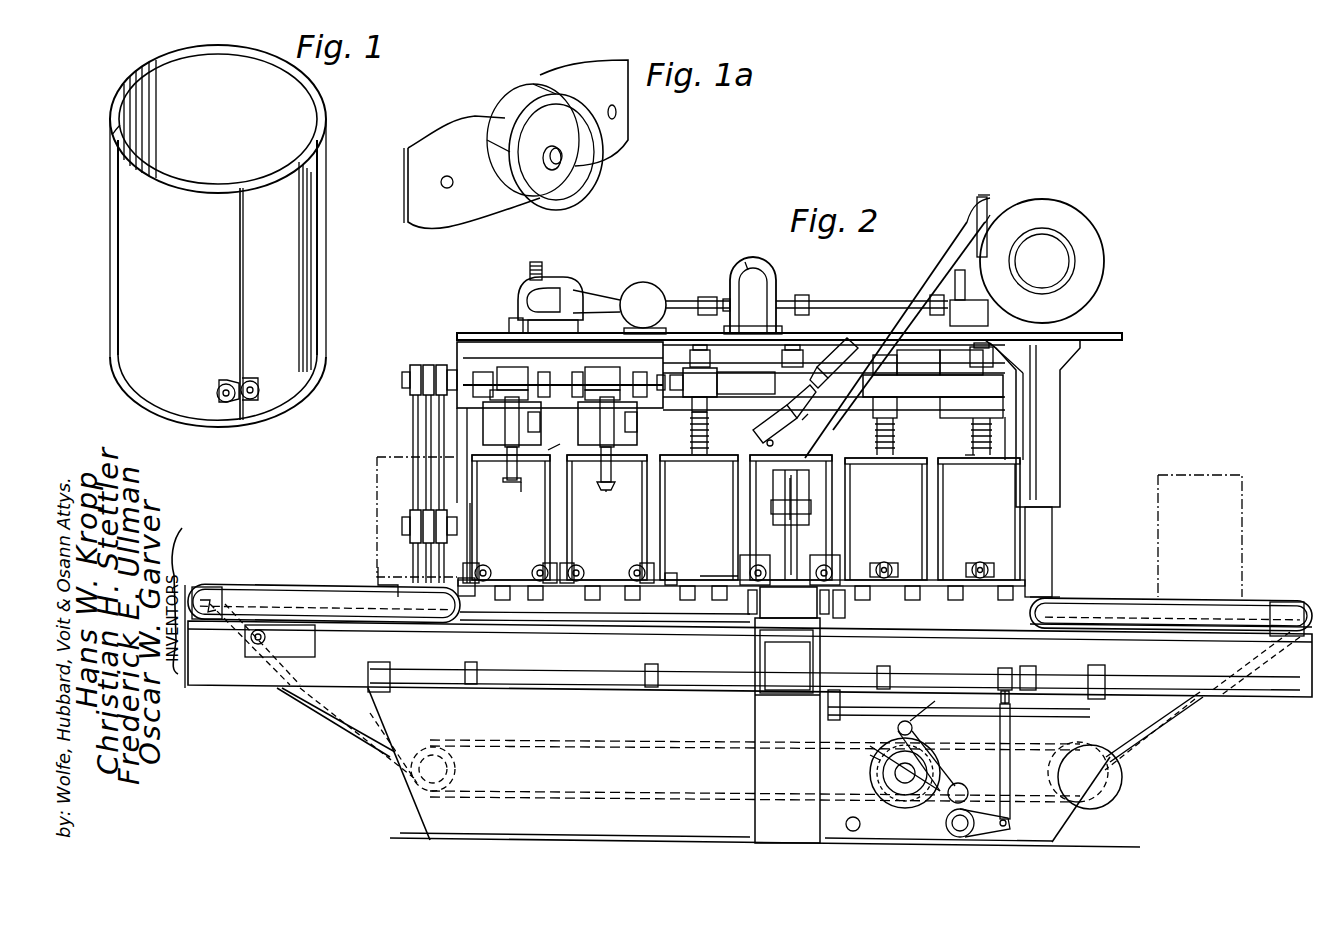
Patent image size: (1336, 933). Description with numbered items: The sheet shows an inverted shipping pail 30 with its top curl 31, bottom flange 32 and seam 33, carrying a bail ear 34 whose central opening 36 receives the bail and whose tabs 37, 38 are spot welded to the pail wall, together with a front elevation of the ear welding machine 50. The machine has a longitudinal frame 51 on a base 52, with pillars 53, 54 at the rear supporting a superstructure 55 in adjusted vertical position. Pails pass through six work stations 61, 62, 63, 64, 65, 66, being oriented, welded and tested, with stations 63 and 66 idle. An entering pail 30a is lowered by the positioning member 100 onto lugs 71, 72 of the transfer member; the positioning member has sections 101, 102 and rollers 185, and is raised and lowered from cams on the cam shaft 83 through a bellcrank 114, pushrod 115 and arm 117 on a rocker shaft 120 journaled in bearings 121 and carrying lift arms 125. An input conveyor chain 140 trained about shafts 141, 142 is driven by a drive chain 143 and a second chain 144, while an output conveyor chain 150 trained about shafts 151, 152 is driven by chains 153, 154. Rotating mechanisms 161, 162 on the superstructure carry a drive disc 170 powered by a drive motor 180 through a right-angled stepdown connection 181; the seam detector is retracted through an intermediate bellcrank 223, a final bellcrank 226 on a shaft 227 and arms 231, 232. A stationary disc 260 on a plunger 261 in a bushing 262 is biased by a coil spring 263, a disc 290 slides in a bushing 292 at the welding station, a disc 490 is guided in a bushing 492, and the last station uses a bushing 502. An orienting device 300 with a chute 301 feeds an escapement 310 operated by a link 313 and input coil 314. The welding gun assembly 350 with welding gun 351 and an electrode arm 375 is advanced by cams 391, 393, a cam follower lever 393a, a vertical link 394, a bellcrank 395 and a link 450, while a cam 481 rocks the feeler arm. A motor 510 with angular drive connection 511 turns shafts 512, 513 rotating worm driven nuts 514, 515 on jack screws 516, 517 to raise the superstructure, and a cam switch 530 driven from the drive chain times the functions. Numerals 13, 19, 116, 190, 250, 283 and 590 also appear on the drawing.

In FIG. 1, the shipping pail 30 is at (135, 231).
In FIG. 1, the top curl 31 is at (112, 365).
In FIG. 1, the bottom flange 32 is at (116, 132).
In FIG. 1, the seam 33 is at (240, 290).
In FIG. 1, the bail ear 34 is at (226, 382).
In FIG. 1A, the bail ear 34 is at (540, 104).
In FIG. 2, the bail ear 34 is at (886, 562).
In FIG. 1A, the central opening 36 is at (558, 150).
In FIG. 1A, the tab 37 is at (448, 146).
In FIG. 1A, the tab 38 is at (626, 136).
In FIG. 2, the machine station 13 is at (828, 498).
In FIG. 2, the direction of travel 19 is at (905, 530).
In FIG. 2, the entering pail 30a is at (376, 492).
In FIG. 2, the machine 50 is at (978, 190).
In FIG. 2, the longitudinal frame 51 is at (276, 684).
In FIG. 2, the base 52 is at (422, 806).
In FIG. 2, the pillar 53 is at (458, 506).
In FIG. 2, the pillar 54 is at (1052, 548).
In FIG. 2, the superstructure 55 is at (452, 348).
In FIG. 2, the first work station 61 is at (521, 537).
In FIG. 2, the second work station 62 is at (619, 537).
In FIG. 2, the third work station 63 is at (699, 517).
In FIG. 2, the fourth work station 64 is at (828, 460).
In FIG. 2, the fifth work station 65 is at (899, 499).
In FIG. 2, the sixth work station 66 is at (979, 519).
In FIG. 2, the pail engaging lug 71 is at (378, 574).
In FIG. 2, the pail engaging lug 72 is at (468, 578).
In FIG. 2, the cam shaft 83 is at (895, 773).
In FIG. 2, the positioning member 100 is at (372, 556).
In FIG. 2, the positioning member section 101 is at (590, 622).
In FIG. 2, the positioning member section 102 is at (990, 628).
In FIG. 2, the bellcrank 114 is at (1000, 836).
In FIG. 2, the pushrod 115 is at (958, 837).
In FIG. 2, the connecting rod 116 is at (1012, 737).
In FIG. 2, the arm 117 is at (1012, 701).
In FIG. 2, the rocker shaft 120 is at (1072, 672).
In FIG. 2, the bearing 121 is at (368, 668).
In FIG. 2, the lift arm 125 is at (936, 672).
In FIG. 2, the input conveyor chain 140 is at (320, 587).
In FIG. 2, the shaft 141 is at (206, 585).
In FIG. 2, the shaft 142 is at (470, 660).
In FIG. 2, the drive chain 143 is at (345, 722).
In FIG. 2, the second chain 144 is at (615, 806).
In FIG. 2, the output conveyor chain 150 is at (1171, 594).
In FIG. 2, the shaft 151 is at (1272, 608).
In FIG. 2, the shaft 152 is at (1040, 597).
In FIG. 2, the drive chain 153 is at (1156, 732).
In FIG. 2, the drive chain 154 is at (1068, 812).
In FIG. 2, the rotating mechanism 161 is at (484, 428).
In FIG. 2, the rotating mechanism 162 is at (638, 434).
In FIG. 2, the drive disc 170 is at (544, 458).
In FIG. 2, the drive motor 180 is at (648, 288).
In FIG. 2, the right-angled stepdown connection 181 is at (560, 286).
In FIG. 2, the roller 185 is at (492, 572).
In FIG. 2, the station head 190 is at (517, 497).
In FIG. 2, the intermediate bellcrank 223 is at (404, 516).
In FIG. 2, the final bellcrank 226 is at (412, 396).
In FIG. 2, the shaft 227 is at (562, 378).
In FIG. 2, the arm 231 is at (486, 378).
In FIG. 2, the arm 232 is at (528, 376).
In FIG. 2, the station head 250 is at (595, 500).
In FIG. 2, the stationary disc 260 is at (696, 456).
In FIG. 2, the plunger 261 is at (708, 406).
In FIG. 2, the bushing 262 is at (716, 384).
In FIG. 2, the coil spring 263 is at (708, 420).
In FIG. 2, the rail block 283 is at (660, 668).
In FIG. 2, the disc 290 is at (758, 436).
In FIG. 2, the bushing 292 is at (780, 360).
In FIG. 2, the orienting device 300 is at (1100, 232).
In FIG. 2, the chute 301 is at (950, 278).
In FIG. 2, the escapement 310 is at (820, 418).
In FIG. 2, the link 313 is at (790, 442).
In FIG. 2, the input coil 314 is at (838, 352).
In FIG. 2, the welding gun assembly 350 is at (720, 566).
In FIG. 2, the welding gun 351 is at (708, 574).
In FIG. 2, the electrode arm 375 is at (746, 608).
In FIG. 2, the cam 391 is at (870, 762).
In FIG. 2, the cam 393 is at (940, 786).
In FIG. 2, the cam follower lever 393a is at (940, 702).
In FIG. 2, the vertical link 394 is at (842, 700).
In FIG. 2, the bellcrank 395 is at (846, 609).
In FIG. 2, the link 450 is at (788, 602).
In FIG. 2, the cam 481 is at (895, 670).
In FIG. 2, the disc 490 is at (933, 436).
In FIG. 2, the bushing 492 is at (938, 410).
In FIG. 2, the bushing 502 is at (900, 386).
In FIG. 2, the motor 510 is at (748, 262).
In FIG. 2, the angular drive connection 511 is at (760, 272).
In FIG. 2, the shaft 512 is at (712, 288).
In FIG. 2, the shaft 513 is at (840, 296).
In FIG. 2, the worm driven nut 514 is at (510, 325).
In FIG. 2, the worm driven nut 515 is at (992, 310).
In FIG. 2, the jack screw 516 is at (530, 275).
In FIG. 2, the jack screw 517 is at (970, 215).
In FIG. 2, the cam switch 530 is at (252, 652).
In FIG. 2, the station base 590 is at (915, 460).